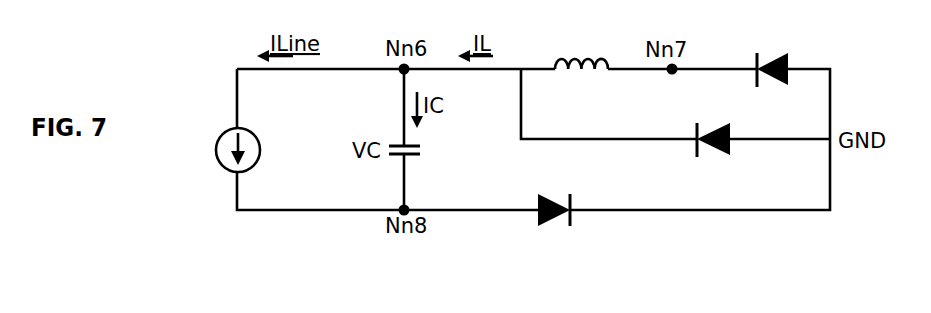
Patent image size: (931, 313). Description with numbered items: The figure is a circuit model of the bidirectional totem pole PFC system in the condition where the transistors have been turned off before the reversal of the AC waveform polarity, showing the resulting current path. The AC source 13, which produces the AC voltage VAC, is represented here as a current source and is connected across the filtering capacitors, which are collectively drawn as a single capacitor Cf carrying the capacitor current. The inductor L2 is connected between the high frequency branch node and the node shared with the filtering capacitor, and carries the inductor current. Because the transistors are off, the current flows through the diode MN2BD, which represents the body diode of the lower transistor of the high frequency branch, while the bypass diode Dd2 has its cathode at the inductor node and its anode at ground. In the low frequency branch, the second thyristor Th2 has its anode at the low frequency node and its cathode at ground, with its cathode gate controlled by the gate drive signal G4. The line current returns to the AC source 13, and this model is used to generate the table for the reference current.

The AC source 13 is at (215, 155).
The AC voltage VAC is at (268, 120).
The capacitor Cf is at (414, 164).
The inductor L2 is at (581, 48).
The body diode of transistor MN2 MN2BD is at (767, 56).
The bypass diode Dd2 is at (713, 155).
The second thyristor Th2 is at (546, 197).
The gate drive signal G4 is at (571, 211).